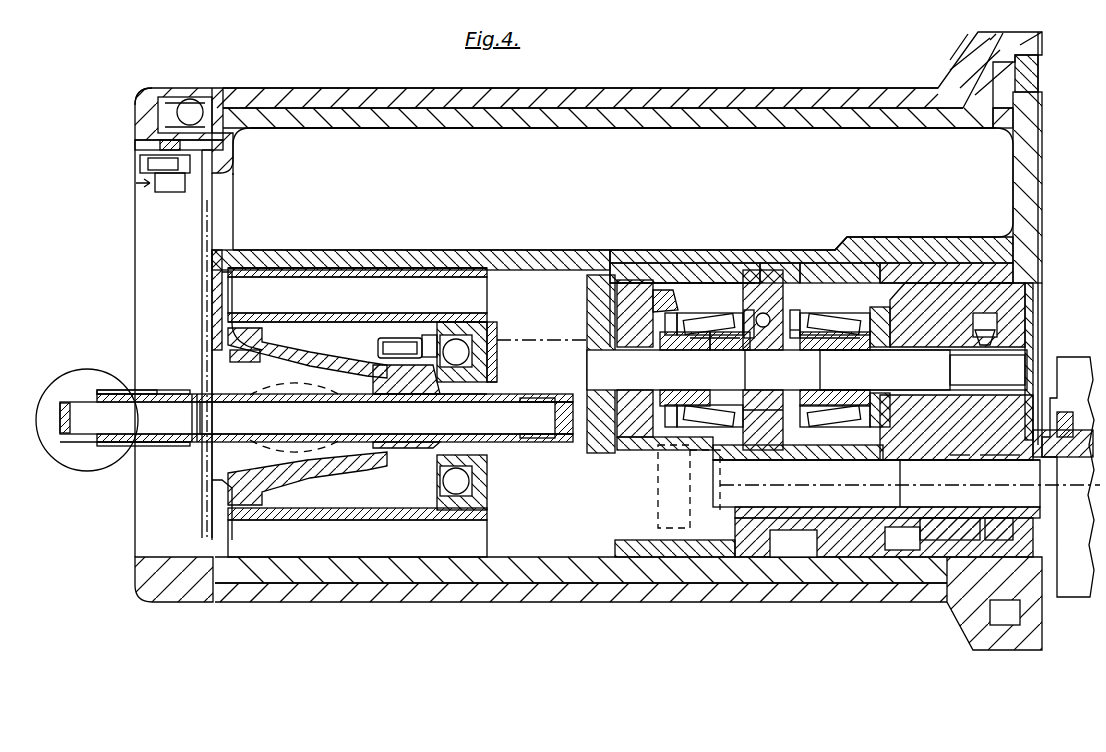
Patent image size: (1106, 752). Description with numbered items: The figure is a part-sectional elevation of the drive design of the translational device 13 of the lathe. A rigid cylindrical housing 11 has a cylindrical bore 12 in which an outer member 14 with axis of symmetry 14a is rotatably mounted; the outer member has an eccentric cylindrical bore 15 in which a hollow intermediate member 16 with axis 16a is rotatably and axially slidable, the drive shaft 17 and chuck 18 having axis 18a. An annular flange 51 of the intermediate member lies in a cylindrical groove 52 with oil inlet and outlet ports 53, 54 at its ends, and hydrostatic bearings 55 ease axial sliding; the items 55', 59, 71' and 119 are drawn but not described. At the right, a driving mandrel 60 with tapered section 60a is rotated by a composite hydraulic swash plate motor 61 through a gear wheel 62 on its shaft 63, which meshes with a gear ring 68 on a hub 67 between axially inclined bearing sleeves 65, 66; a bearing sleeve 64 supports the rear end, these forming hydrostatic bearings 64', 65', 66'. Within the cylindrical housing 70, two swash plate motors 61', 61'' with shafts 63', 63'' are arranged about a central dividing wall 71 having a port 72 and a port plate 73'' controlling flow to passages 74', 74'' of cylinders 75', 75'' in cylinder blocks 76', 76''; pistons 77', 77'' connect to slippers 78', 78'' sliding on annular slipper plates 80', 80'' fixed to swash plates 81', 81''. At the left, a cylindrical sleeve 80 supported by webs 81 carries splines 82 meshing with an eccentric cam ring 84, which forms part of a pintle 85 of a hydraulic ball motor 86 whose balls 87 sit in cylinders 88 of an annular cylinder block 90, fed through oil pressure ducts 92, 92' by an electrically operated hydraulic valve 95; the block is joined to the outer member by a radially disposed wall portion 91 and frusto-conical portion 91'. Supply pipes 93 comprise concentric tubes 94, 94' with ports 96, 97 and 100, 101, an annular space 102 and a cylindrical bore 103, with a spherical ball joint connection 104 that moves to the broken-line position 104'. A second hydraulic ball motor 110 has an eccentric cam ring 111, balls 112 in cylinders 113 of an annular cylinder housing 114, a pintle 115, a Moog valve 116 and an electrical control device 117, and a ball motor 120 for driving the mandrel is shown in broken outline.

The housing 11 is at (750, 108).
The cylindrical bore 12 is at (538, 108).
The translational device 13 is at (153, 243).
The outer member 14 is at (296, 128).
The axis of symmetry 14a is at (545, 340).
The cylindrical bore 15 is at (404, 262).
The intermediate member 16 is at (318, 268).
The axis of symmetry 16a is at (560, 400).
The drive shaft 17 is at (884, 537).
The chuck 18 is at (1068, 477).
The axis of symmetry 18a is at (900, 487).
The annular flange 51 is at (625, 255).
The cylindrical groove 52 is at (703, 250).
The oil inlet port 53 is at (611, 252).
The oil outlet port 54 is at (838, 250).
The hydrostatic bearings 55 is at (561, 386).
The fastening bolt 55' is at (623, 308).
The output shaft sleeve 59 is at (887, 490).
The driving mandrel 60 is at (835, 460).
The tapered section 60a is at (1045, 455).
The composite hydraulic swash plate motor 61 is at (745, 247).
The swash plate motor 61' is at (685, 257).
The swash plate motor 61'' is at (937, 254).
The gear wheel 62 is at (982, 330).
The common drive shaft 63 is at (893, 336).
The drive shaft 63' is at (807, 364).
The drive shaft 63'' is at (885, 367).
The bearing sleeve 64 is at (750, 470).
The hydrostatic bearing 64' is at (876, 477).
The axially inclined bearing sleeve 65 is at (950, 512).
The hydrostatic bearing 65' is at (952, 471).
The axially inclined bearing sleeve 66 is at (1010, 512).
The hydrostatic bearing 66' is at (1006, 471).
The hub 67 is at (1029, 361).
The gear ring 68 is at (985, 455).
The cylindrical housing 70 is at (795, 243).
The central dividing wall 71 is at (764, 360).
The gear carrier portion 71' is at (765, 415).
The port 72 is at (749, 370).
The port plate 73'' is at (797, 312).
The passage 74' is at (686, 369).
The passage 74'' is at (830, 369).
The cylinder 75' is at (732, 336).
The cylinder 75'' is at (804, 307).
The cylinder block 76' is at (715, 306).
The cylinder block 76'' is at (830, 306).
The piston 77' is at (710, 355).
The piston 77'' is at (835, 359).
The slipper 78' is at (680, 352).
The slipper 78'' is at (871, 359).
The cylindrical sleeve 80 is at (357, 394).
The annular slipper plate 80' is at (663, 294).
The annular slipper plate 80'' is at (946, 254).
The webs 81 is at (357, 417).
The swash plate 81' is at (635, 358).
The swash plate 81'' is at (956, 371).
The splines 82 is at (340, 345).
The eccentric cam ring 84 is at (452, 325).
The pintle 85 is at (490, 330).
The hydraulic ball motor 86 is at (495, 368).
The balls 87 is at (456, 350).
The cylinders 88 is at (432, 341).
The annular cylinder block 90 is at (428, 465).
The radially disposed wall portion 91 is at (213, 395).
The frusto-conical portion 91' is at (357, 317).
The oil pressure duct 92 is at (386, 406).
The oil pressure duct 92' is at (430, 405).
The supply pipes 93 is at (140, 390).
The tube 94 is at (335, 408).
The tube 94' is at (191, 403).
The electrically operated hydraulic valve 95 is at (380, 345).
The port 96 is at (130, 447).
The port 97 is at (88, 440).
The port 100 is at (528, 400).
The port 101 is at (548, 400).
The annular space 102 is at (232, 394).
The cylindrical bore 103 is at (150, 395).
The spherical ball joint connection 104 is at (125, 464).
The spherical joint position 104' is at (295, 427).
The hydraulic ball motor 110 is at (146, 111).
The eccentric cam ring 111 is at (182, 97).
The balls 112 is at (192, 112).
The cylinders 113 is at (215, 100).
The annular cylinder housing 114 is at (233, 146).
The pintle 115 is at (140, 147).
The Moog valve 116 is at (145, 170).
The electrical control device 117 is at (168, 185).
The spacer 119 is at (230, 355).
The ball motor 120 is at (660, 490).